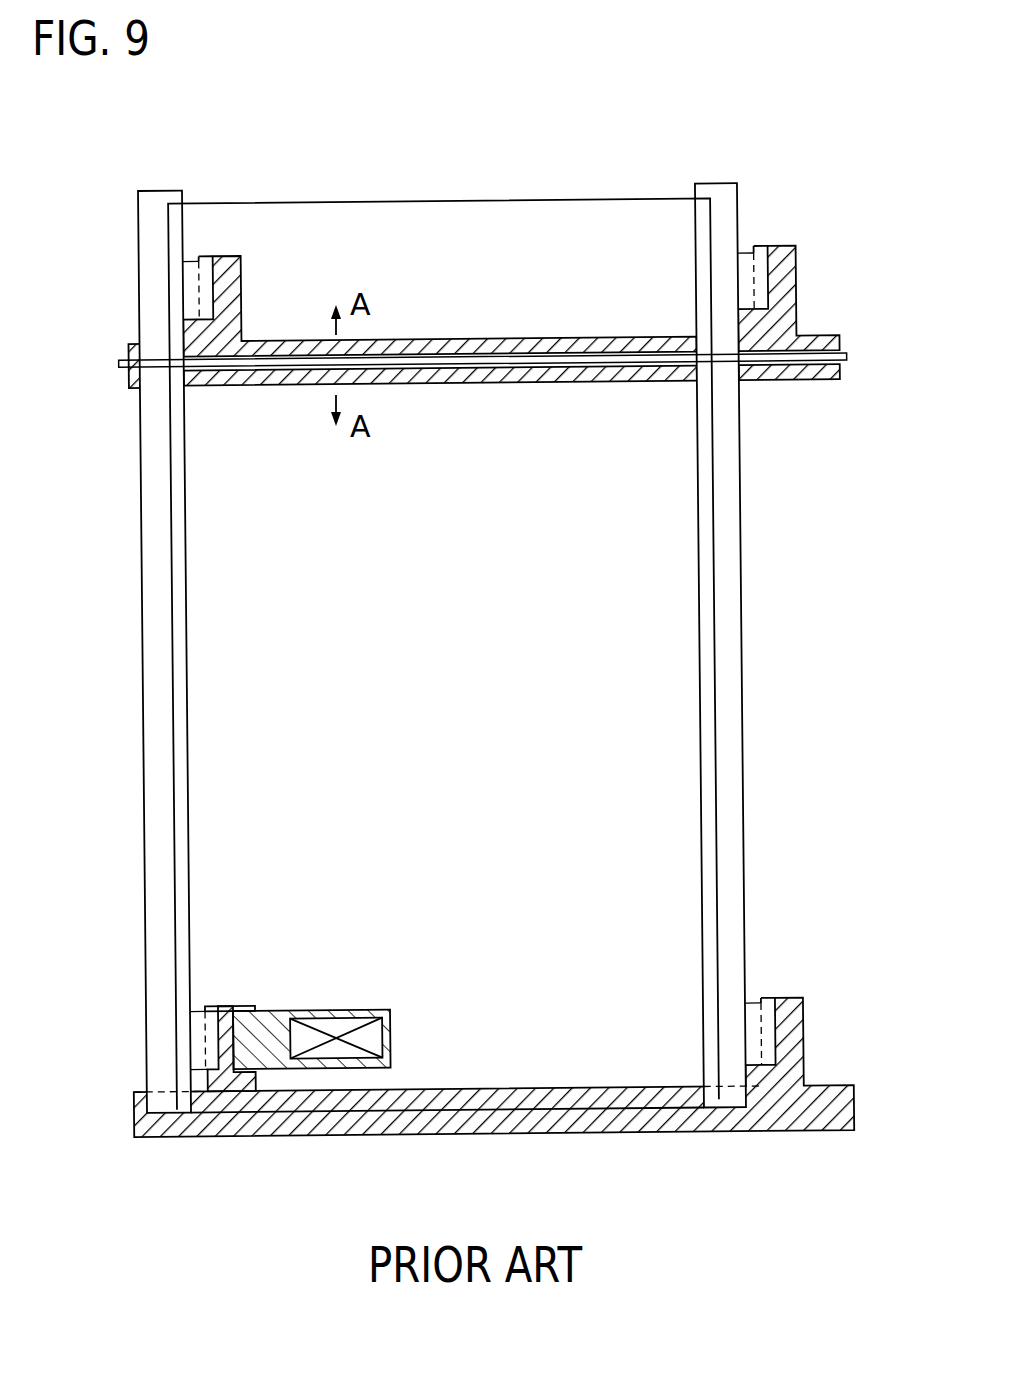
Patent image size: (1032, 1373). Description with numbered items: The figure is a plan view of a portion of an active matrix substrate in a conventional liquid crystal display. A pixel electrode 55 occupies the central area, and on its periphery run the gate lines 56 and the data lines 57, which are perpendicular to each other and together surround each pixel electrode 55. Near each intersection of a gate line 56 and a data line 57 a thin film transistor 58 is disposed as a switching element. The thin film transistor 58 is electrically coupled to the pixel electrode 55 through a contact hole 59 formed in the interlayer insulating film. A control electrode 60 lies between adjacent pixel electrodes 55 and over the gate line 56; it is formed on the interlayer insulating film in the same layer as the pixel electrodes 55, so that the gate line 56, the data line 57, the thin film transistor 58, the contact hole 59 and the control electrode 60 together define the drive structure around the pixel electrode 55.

The pixel electrode 55 is at (430, 224).
The gate line 56 is at (838, 350).
The data line 57 is at (157, 191).
The thin film transistor 58 is at (222, 992).
The contact hole 59 is at (345, 1030).
The control electrode 60 is at (845, 363).